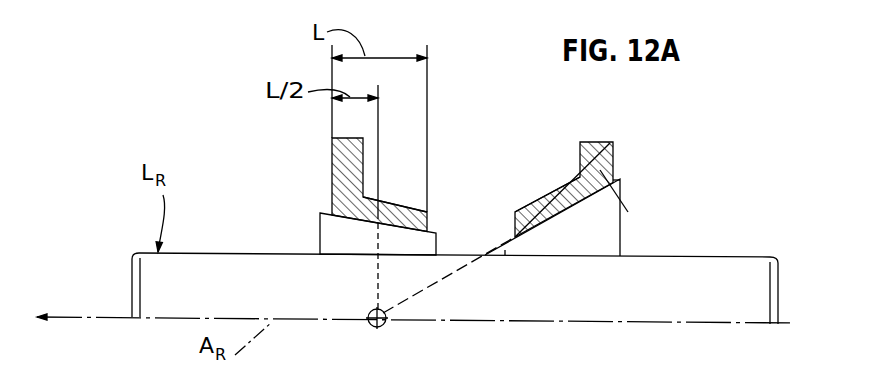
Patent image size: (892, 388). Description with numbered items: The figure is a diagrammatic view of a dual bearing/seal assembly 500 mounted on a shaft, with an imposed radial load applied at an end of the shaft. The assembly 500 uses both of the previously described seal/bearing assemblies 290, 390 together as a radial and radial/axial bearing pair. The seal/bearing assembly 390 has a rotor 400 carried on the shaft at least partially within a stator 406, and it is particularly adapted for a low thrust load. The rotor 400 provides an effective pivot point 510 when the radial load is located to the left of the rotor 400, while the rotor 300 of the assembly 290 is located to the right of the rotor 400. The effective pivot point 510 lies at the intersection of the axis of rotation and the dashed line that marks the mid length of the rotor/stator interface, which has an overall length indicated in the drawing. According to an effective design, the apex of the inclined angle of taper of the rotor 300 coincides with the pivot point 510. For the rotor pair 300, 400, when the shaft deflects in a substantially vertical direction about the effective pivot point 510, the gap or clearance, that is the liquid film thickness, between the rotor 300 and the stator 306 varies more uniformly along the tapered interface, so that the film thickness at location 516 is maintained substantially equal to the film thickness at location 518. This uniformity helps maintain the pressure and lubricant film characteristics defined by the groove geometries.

The seal/bearing assembly 290 is at (621, 176).
The rotor 300 is at (598, 240).
The stator 306 is at (540, 203).
The seal/bearing assembly 390 is at (330, 160).
The rotor 400 is at (340, 227).
The stator 406 is at (413, 203).
The assembly 500 is at (477, 78).
The effective pivot point 510 is at (383, 326).
The film thickness location 516 is at (525, 258).
The film thickness location 518 is at (637, 191).